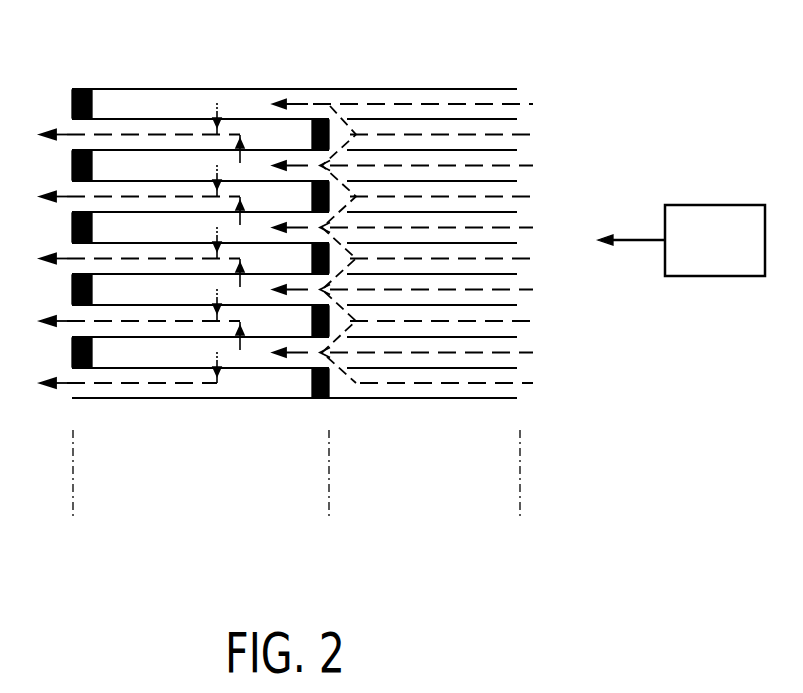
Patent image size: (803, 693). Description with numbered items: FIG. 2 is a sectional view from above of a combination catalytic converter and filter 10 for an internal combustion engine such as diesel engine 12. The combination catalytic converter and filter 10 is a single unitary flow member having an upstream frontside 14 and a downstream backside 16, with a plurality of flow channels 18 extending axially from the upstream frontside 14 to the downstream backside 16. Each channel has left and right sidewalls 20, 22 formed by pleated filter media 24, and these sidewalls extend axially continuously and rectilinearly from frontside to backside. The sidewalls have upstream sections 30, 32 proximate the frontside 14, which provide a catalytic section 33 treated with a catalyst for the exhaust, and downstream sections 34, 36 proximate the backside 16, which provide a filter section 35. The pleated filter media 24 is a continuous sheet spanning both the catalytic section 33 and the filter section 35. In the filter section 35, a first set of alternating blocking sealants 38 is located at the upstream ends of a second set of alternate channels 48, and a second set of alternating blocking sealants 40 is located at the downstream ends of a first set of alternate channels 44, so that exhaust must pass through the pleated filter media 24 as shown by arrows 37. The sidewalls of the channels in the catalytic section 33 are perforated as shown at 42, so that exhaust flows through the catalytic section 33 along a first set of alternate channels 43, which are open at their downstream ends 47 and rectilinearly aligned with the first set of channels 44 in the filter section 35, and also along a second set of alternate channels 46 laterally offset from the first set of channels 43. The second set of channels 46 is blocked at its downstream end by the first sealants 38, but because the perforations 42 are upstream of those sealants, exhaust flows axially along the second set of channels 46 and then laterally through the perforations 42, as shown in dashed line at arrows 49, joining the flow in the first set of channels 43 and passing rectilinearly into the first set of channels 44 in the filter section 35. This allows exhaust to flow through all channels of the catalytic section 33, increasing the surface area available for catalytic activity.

The combination catalytic converter and filter 10 is at (480, 77).
The diesel engine 12 is at (712, 205).
The upstream frontside 14 is at (530, 178).
The downstream backside 16 is at (50, 117).
The flow channels 18 is at (531, 90).
The left sidewall 20 is at (510, 396).
The right sidewall 22 is at (510, 370).
The pleated filter media 24 is at (510, 335).
The upstream section 30 is at (457, 399).
The upstream section 32 is at (423, 368).
The catalytic section 33 is at (370, 514).
The downstream section 34 is at (285, 399).
The filter section 35 is at (263, 509).
The downstream section 36 is at (160, 369).
The arrows 37 is at (218, 116).
The first set of alternating blocking sealants 38 is at (311, 135).
The second set of alternating blocking sealants 40 is at (93, 97).
The perforations 42 is at (364, 103).
The first set of alternate channels 43 is at (510, 108).
The first set of alternate channels 44 is at (163, 98).
The second set of alternate channels 46 is at (510, 140).
The downstream ends 47 is at (307, 100).
The second set of alternate channels 48 is at (183, 120).
The arrows 49 is at (334, 106).